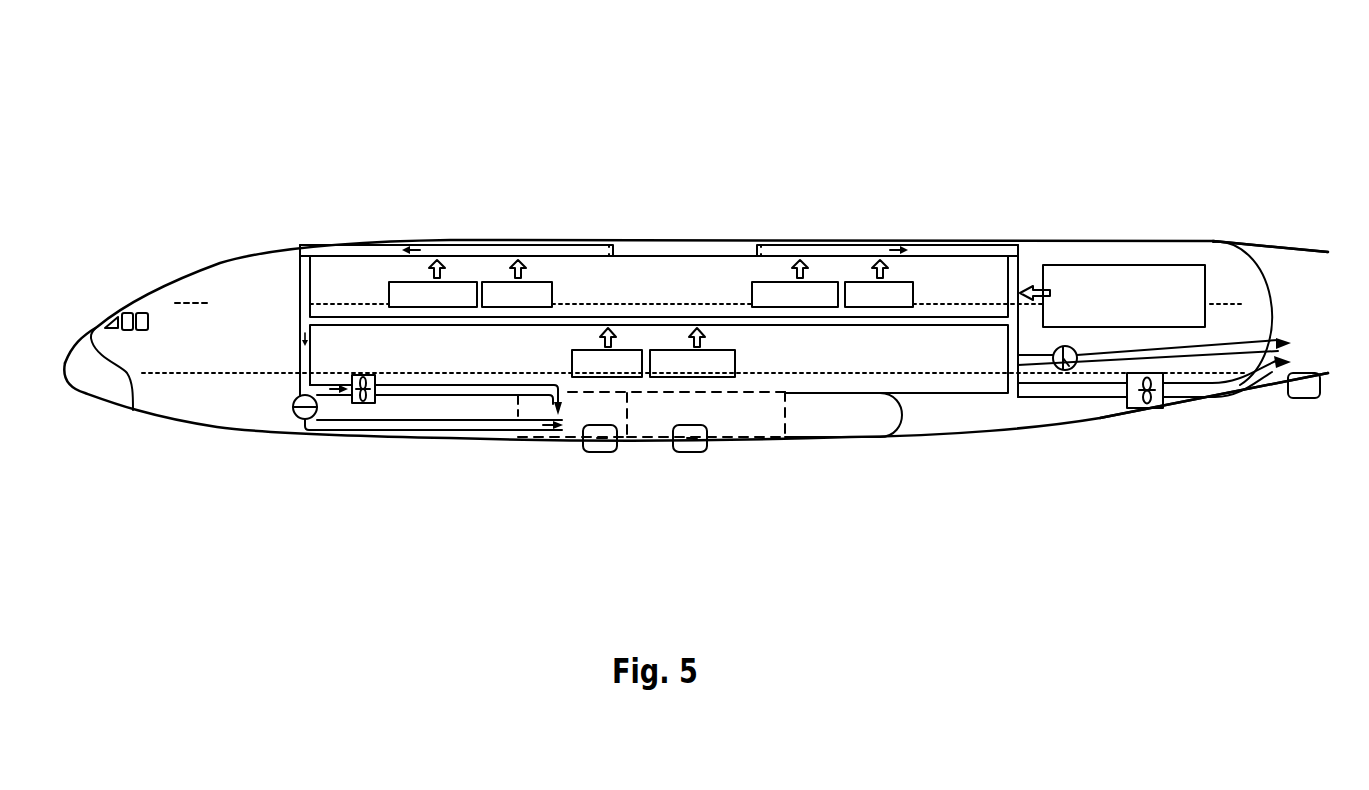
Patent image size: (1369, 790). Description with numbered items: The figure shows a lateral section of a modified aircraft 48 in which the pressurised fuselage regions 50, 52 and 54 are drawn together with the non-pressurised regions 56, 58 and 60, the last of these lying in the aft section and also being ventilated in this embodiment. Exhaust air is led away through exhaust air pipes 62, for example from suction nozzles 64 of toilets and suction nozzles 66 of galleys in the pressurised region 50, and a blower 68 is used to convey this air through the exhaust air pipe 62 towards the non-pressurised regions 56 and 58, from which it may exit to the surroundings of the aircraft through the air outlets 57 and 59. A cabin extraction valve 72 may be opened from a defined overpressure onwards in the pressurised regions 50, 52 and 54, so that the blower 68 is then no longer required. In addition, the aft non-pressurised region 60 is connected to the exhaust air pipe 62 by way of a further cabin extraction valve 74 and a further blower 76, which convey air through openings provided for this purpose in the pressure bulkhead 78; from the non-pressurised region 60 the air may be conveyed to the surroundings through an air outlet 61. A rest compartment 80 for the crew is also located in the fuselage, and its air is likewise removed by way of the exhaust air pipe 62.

The aircraft 48 is at (642, 140).
The pressurised fuselage region 50 is at (625, 268).
The pressurised fuselage region 52 is at (883, 362).
The pressurised fuselage region 54 is at (108, 338).
The non-pressurised region 56 is at (577, 423).
The air outlet 57 is at (598, 452).
The non-pressurised region 58 is at (740, 425).
The air outlet 59 is at (690, 452).
The non-pressurised region 60 is at (1292, 298).
The air outlet 61 is at (1305, 398).
The exhaust air pipe 62 is at (382, 252).
The suction nozzle of toilet 64 is at (400, 292).
The suction nozzle of galley 66 is at (542, 298).
The blower 68 is at (360, 403).
The cabin extraction valve 72 is at (297, 417).
The cabin extraction valve 74 is at (1068, 368).
The further blower 76 is at (1158, 408).
The pressure bulkhead 78 is at (1235, 260).
The rest compartment 80 is at (1160, 280).